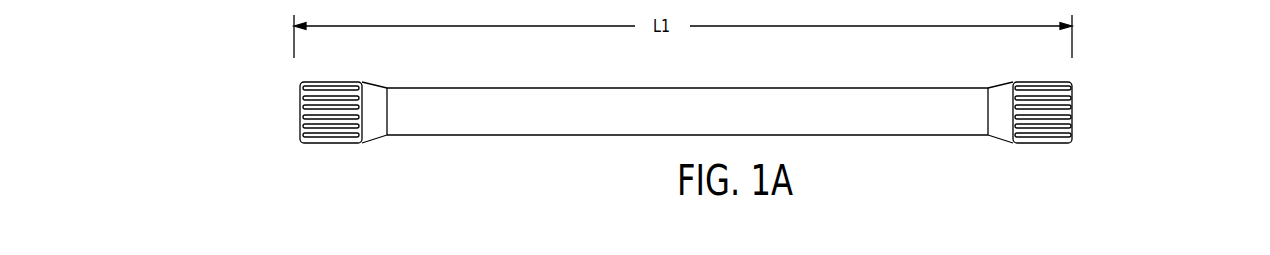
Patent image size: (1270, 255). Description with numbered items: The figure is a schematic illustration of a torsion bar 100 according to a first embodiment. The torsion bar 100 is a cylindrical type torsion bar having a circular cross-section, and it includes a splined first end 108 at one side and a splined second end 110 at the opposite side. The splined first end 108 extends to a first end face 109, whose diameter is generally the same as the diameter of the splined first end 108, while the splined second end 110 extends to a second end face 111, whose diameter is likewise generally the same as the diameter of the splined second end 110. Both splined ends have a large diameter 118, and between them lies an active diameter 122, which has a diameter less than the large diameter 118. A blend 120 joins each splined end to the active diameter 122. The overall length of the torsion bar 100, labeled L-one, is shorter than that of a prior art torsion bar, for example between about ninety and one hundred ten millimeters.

The torsion bar 100 is at (230, 78).
The splined first end 108 is at (337, 157).
The first end face 109 is at (300, 120).
The splined second end 110 is at (1045, 157).
The second end face 111 is at (1070, 116).
The large diameter 118 is at (333, 82).
The blend 120 is at (370, 84).
The active diameter 122 is at (700, 88).